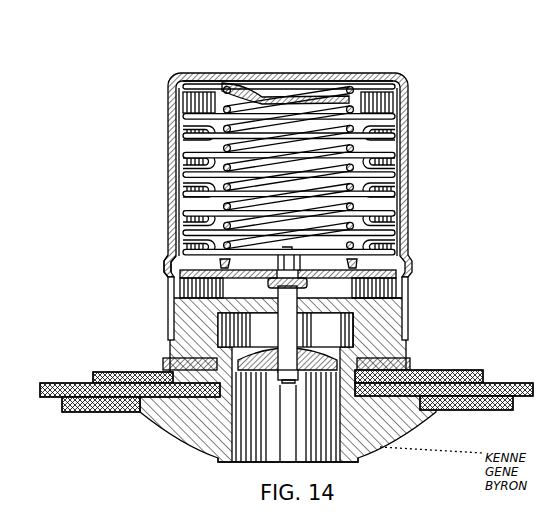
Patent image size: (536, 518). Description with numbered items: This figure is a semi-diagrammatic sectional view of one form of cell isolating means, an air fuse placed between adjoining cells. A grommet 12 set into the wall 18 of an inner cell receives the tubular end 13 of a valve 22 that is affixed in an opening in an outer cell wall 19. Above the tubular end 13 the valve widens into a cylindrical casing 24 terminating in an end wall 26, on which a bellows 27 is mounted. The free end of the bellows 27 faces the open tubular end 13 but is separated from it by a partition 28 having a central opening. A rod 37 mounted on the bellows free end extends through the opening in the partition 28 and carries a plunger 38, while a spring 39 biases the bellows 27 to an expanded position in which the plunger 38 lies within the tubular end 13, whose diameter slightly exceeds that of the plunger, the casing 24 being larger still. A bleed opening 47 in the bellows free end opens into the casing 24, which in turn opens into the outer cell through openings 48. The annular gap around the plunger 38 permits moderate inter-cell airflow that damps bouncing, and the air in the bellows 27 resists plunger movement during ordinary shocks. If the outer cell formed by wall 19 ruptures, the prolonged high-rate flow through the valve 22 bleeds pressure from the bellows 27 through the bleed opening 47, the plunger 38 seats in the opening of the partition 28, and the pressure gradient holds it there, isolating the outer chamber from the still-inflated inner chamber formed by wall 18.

The grommet 12 is at (190, 450).
The tubular end 13 is at (243, 465).
The wall 18 is at (96, 412).
The outer cell wall 19 is at (466, 370).
The valve 22 is at (300, 183).
The cylindrical casing 24 is at (223, 328).
The end wall 26 is at (214, 73).
The bellows 27 is at (412, 177).
The partition 28 is at (385, 298).
The rod 37 is at (307, 328).
The plunger 38 is at (307, 378).
The spring 39 is at (361, 100).
The bleed opening 47 is at (240, 286).
The openings 48 is at (176, 263).